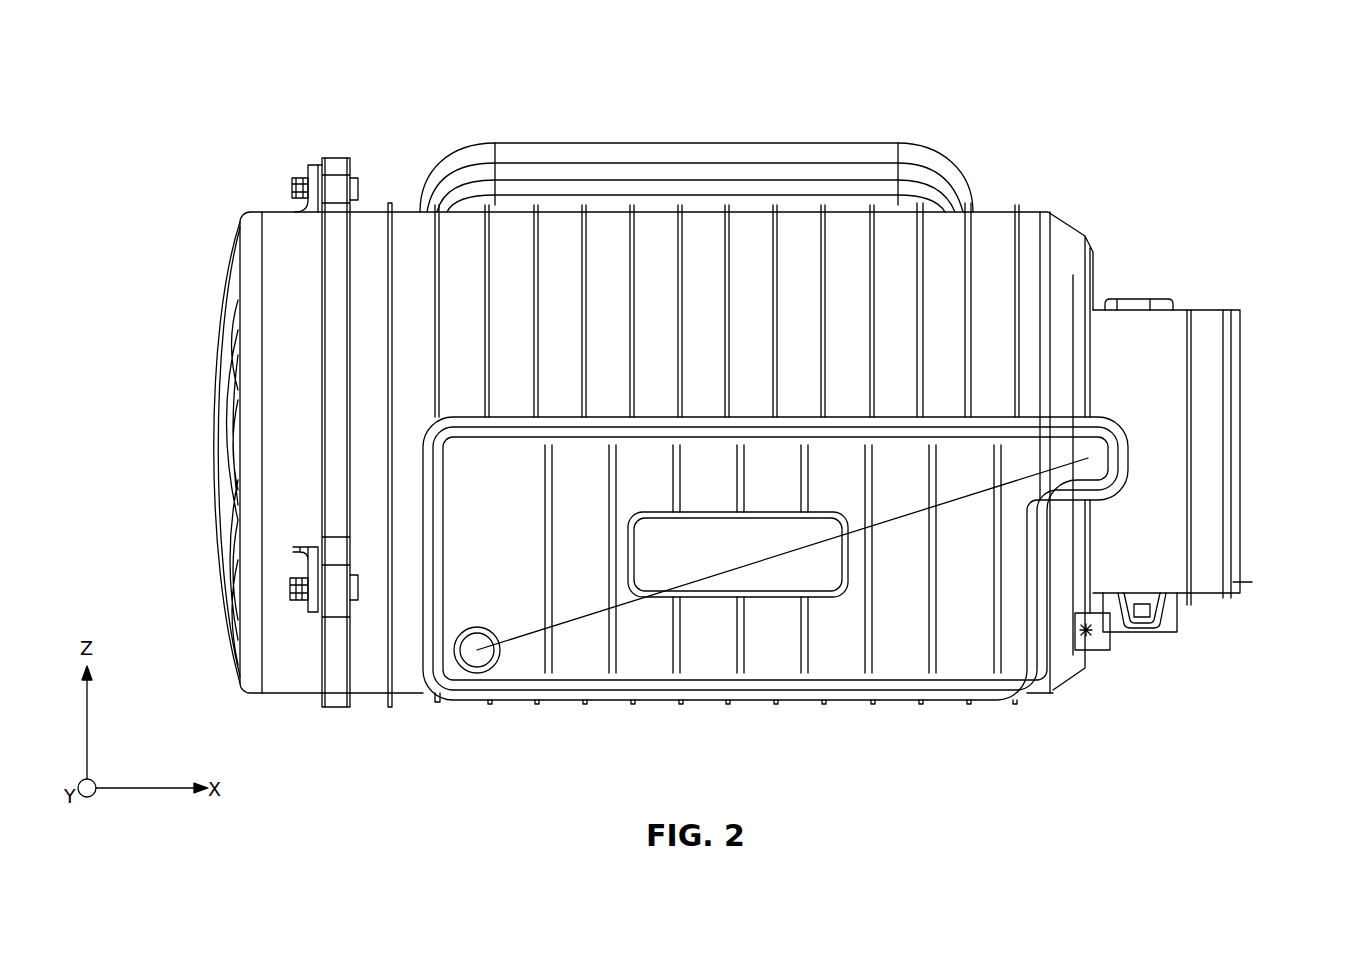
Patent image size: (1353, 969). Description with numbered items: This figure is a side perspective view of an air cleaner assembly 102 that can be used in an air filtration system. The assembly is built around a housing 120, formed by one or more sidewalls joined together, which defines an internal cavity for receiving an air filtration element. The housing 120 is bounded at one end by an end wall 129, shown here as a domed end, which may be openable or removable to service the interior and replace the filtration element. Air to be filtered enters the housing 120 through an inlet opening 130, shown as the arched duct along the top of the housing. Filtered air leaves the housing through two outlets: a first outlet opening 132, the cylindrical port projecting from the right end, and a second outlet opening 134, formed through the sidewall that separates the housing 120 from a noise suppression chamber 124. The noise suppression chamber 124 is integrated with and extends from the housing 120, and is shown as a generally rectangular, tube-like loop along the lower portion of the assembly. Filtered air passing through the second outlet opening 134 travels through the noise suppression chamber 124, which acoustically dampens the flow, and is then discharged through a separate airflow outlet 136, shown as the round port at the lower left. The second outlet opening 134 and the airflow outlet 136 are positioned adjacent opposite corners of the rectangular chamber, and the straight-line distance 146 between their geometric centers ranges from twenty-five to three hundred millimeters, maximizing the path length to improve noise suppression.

The air cleaner assembly 102 is at (1152, 128).
The housing 120 is at (1033, 208).
The noise suppression chamber 124 is at (1013, 712).
The end wall 129 is at (216, 580).
The inlet opening 130 is at (757, 120).
The first outlet opening 132 is at (1252, 448).
The second outlet opening 134 is at (1088, 458).
The airflow outlet 136 is at (470, 658).
The distance 146 is at (737, 556).